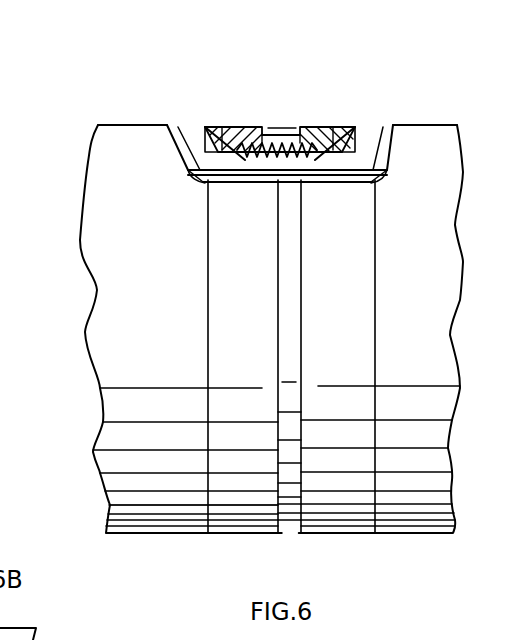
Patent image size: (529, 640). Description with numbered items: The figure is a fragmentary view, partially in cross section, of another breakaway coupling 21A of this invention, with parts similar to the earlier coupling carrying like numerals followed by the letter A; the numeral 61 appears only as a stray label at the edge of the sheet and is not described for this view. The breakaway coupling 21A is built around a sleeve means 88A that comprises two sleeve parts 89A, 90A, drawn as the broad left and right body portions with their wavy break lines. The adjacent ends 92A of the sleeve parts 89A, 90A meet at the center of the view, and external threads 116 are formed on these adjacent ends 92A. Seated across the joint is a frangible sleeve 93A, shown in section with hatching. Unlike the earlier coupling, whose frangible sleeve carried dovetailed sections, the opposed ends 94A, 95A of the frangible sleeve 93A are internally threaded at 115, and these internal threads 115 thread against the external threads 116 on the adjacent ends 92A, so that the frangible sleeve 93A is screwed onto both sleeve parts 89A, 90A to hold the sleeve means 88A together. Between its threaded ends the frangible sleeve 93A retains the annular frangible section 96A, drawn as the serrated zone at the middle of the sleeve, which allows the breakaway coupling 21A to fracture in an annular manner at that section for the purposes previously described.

The partial element from adjacent figure 61 is at (0, 11).
The breakaway coupling 21A is at (348, 55).
The sleeve means 88A is at (162, 537).
The sleeve part 89A is at (100, 296).
The sleeve part 90A is at (422, 331).
The adjacent ends 92A is at (268, 186).
The frangible sleeve 93A is at (245, 128).
The opposed end 94A is at (210, 127).
The opposed end 95A is at (348, 140).
The annular frangible section 96A is at (286, 133).
The internal threads 115 is at (203, 180).
The external threads 116 is at (220, 127).